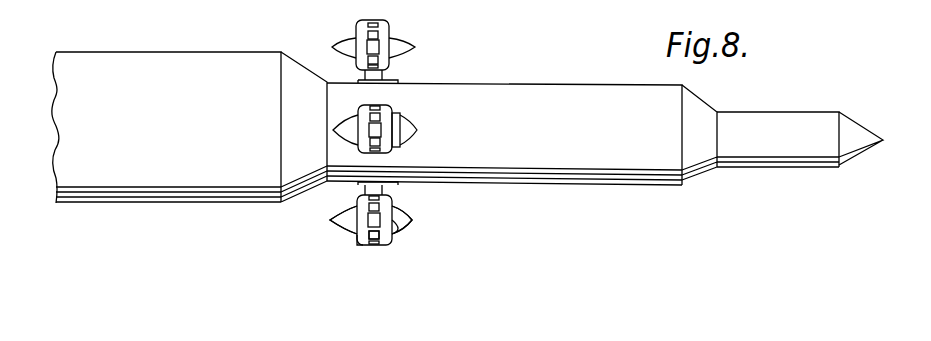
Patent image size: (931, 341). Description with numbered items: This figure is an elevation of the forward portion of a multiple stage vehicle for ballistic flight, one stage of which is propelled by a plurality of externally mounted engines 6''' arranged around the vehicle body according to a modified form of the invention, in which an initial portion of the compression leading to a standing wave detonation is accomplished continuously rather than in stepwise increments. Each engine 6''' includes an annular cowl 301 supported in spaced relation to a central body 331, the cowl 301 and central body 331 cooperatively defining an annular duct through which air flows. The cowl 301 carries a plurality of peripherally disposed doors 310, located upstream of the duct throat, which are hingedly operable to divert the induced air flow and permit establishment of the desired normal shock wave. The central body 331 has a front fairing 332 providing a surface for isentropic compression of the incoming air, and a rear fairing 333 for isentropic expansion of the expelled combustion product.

The externally mounted engines 6''' is at (390, 138).
The annular cowl 301 is at (362, 243).
The doors 310 is at (371, 244).
The central body 331 is at (403, 227).
The front fairing 332 is at (395, 214).
The rear fairing 333 is at (353, 213).